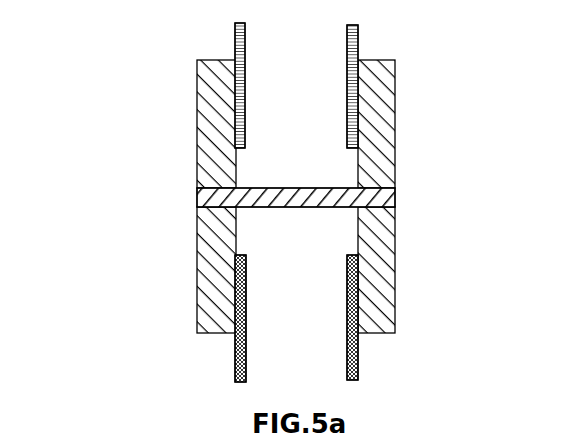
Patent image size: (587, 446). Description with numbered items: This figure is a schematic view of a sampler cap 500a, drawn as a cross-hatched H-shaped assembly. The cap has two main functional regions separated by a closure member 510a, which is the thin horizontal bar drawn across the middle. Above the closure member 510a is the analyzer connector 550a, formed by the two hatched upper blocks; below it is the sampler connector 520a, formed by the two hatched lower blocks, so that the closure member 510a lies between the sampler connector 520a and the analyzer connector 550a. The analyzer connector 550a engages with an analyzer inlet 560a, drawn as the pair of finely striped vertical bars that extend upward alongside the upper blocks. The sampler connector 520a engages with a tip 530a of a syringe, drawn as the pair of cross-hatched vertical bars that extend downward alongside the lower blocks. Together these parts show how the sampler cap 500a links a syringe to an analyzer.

The sampler cap 500a is at (279, 202).
The closure member 510a is at (395, 197).
The sampler connector 520a is at (374, 264).
The tip 530a is at (358, 352).
The analyzer connector 550a is at (380, 128).
The analyzer inlet 560a is at (358, 41).